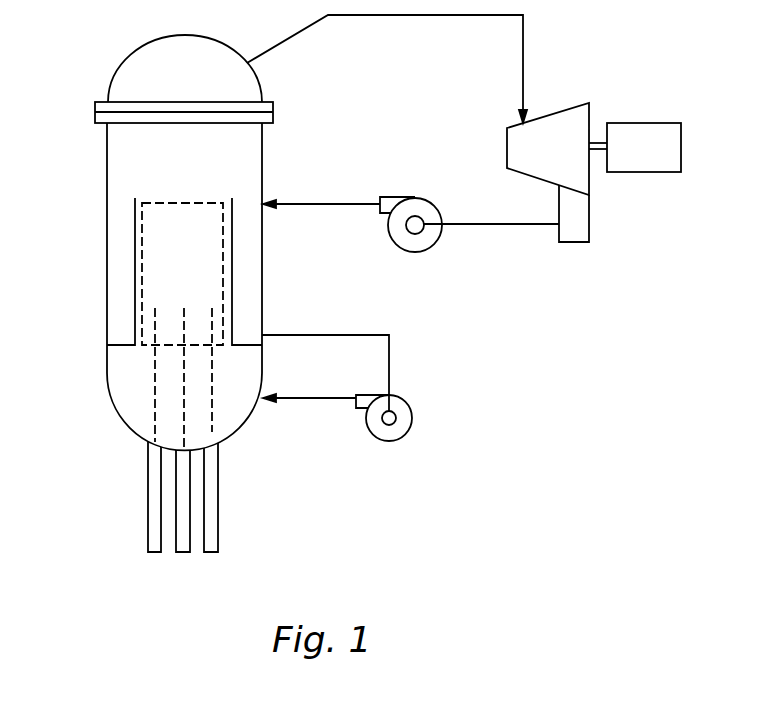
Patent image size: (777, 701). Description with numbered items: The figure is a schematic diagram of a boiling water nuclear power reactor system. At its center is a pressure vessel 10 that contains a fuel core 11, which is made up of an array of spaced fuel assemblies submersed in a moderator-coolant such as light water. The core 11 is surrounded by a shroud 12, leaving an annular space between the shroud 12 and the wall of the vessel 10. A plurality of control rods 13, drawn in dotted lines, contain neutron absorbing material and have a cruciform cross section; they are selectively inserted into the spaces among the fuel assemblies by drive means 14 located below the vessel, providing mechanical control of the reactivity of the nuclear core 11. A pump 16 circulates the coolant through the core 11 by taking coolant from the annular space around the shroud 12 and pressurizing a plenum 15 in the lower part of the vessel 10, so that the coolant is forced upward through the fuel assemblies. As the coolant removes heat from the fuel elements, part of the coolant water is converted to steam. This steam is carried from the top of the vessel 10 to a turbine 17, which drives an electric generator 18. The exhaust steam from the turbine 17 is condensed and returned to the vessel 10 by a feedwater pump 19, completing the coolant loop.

The pressure vessel 10 is at (107, 168).
The fuel core 11 is at (200, 268).
The shroud 12 is at (135, 265).
The control rods 13 is at (157, 403).
The drive means 14 is at (148, 517).
The plenum 15 is at (245, 398).
The pump 16 is at (412, 418).
The turbine 17 is at (554, 113).
The electric generator 18 is at (652, 122).
The feedwater pump 19 is at (428, 252).